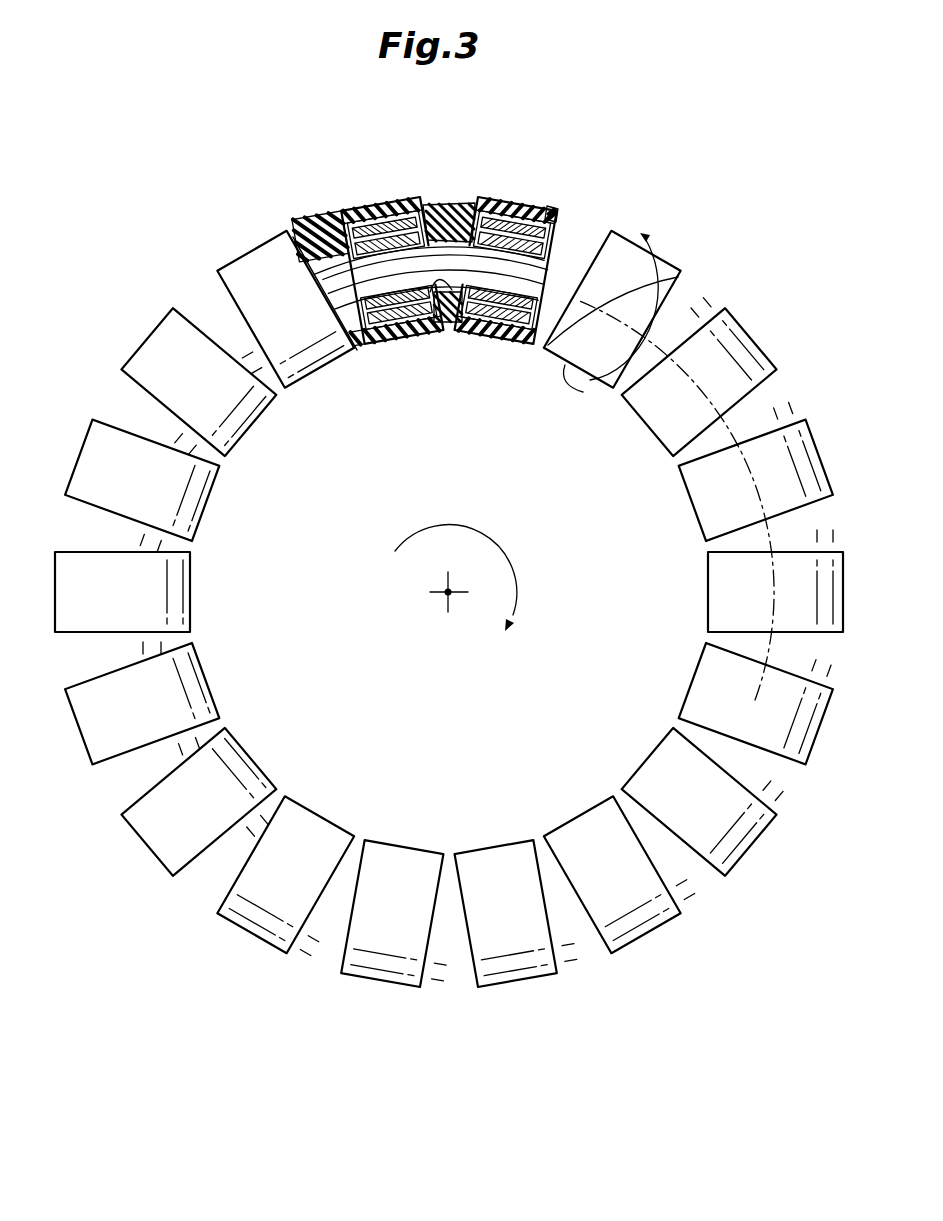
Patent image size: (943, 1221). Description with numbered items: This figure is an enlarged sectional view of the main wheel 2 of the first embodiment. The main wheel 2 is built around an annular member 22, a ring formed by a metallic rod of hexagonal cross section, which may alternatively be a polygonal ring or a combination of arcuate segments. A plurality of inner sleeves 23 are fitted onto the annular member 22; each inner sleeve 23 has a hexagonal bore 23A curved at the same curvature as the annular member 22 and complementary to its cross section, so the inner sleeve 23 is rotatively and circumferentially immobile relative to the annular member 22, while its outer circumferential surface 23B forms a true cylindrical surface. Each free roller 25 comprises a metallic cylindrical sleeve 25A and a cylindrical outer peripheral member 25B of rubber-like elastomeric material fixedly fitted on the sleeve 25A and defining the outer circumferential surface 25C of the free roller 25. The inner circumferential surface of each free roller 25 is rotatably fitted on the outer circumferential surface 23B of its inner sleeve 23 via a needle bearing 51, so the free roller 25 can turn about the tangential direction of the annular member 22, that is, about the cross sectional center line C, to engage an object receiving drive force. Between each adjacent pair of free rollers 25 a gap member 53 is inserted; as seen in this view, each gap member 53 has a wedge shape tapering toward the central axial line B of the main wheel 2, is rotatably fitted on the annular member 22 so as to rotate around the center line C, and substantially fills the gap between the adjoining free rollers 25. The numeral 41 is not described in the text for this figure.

The main wheel 2 is at (693, 213).
The annular member 22 is at (337, 288).
The inner sleeve 23 is at (562, 243).
The hexagonal bore 23A is at (453, 332).
The outer circumferential surface 23B is at (382, 337).
The free roller 25 is at (509, 195).
The cylindrical sleeve 25A is at (430, 213).
The outer peripheral member 25B is at (338, 224).
The outer circumferential surface 25C is at (382, 207).
The adhesive layer 41 is at (548, 222).
The needle bearing 51 is at (410, 228).
The gap member 53 is at (465, 200).
The central axial line B is at (446, 596).
The cross sectional center line C is at (733, 430).